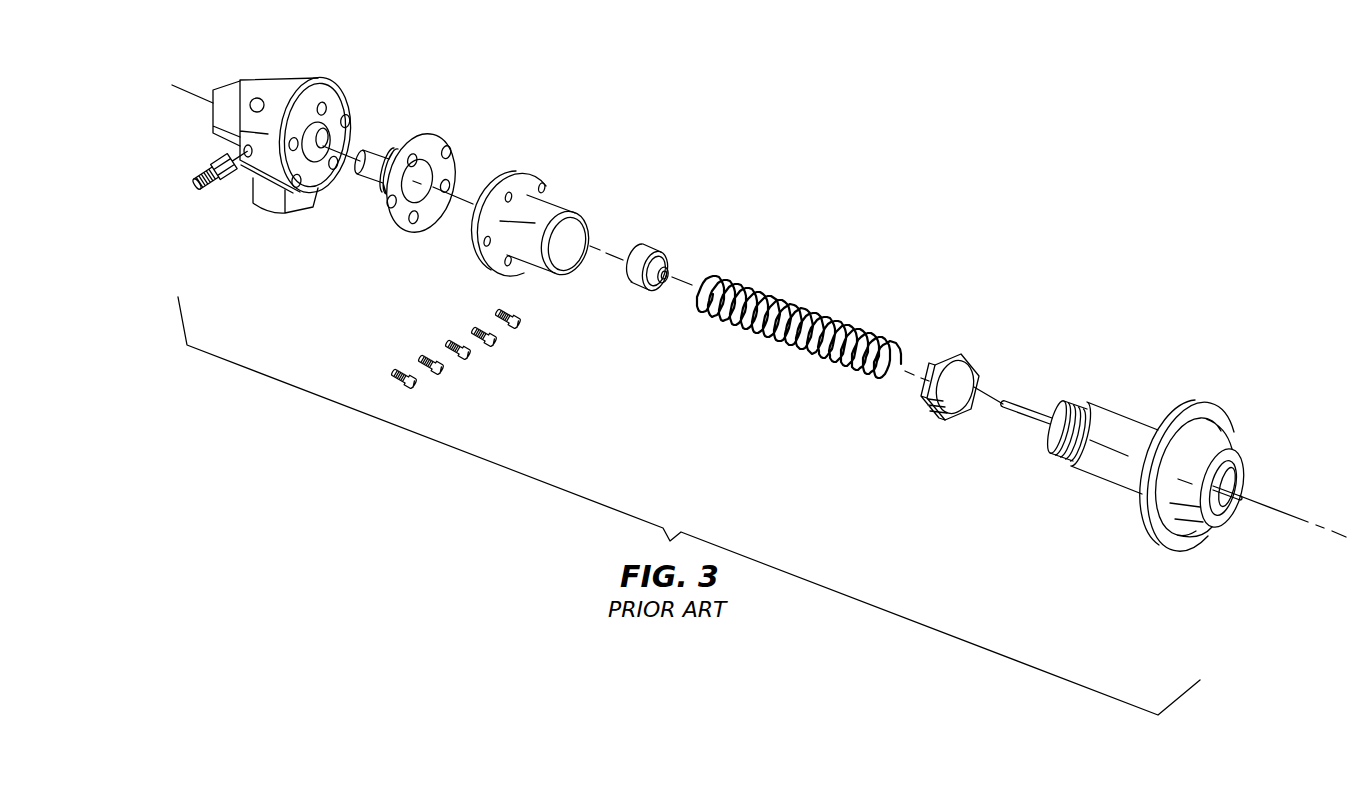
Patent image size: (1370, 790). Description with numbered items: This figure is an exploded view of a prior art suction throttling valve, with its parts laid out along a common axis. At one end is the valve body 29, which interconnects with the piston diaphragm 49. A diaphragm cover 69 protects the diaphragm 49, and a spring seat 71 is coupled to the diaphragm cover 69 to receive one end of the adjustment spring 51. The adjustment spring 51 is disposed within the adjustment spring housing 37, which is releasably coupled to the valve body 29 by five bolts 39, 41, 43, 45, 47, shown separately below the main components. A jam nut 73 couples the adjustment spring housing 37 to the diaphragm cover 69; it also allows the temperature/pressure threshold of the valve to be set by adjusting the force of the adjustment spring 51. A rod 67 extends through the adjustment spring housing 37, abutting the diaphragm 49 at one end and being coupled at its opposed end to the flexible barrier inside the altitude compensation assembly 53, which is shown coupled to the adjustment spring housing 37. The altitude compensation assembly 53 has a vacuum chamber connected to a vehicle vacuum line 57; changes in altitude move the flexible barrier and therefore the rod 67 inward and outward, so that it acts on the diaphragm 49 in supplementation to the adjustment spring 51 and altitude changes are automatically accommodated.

The valve body 29 is at (302, 80).
The piston diaphragm 49 is at (450, 141).
The diaphragm cover 69 is at (572, 207).
The spring seat 71 is at (636, 291).
The adjustment spring 51 is at (815, 311).
The jam nut 73 is at (966, 357).
The rod 67 is at (1012, 403).
The adjustment spring housing 37 is at (1120, 405).
The altitude compensation assembly 53 is at (1143, 514).
The vehicle vacuum line 57 is at (1242, 500).
The bolt 39 is at (526, 328).
The bolt 41 is at (502, 339).
The bolt 43 is at (476, 354).
The bolt 45 is at (449, 369).
The bolt 47 is at (424, 384).